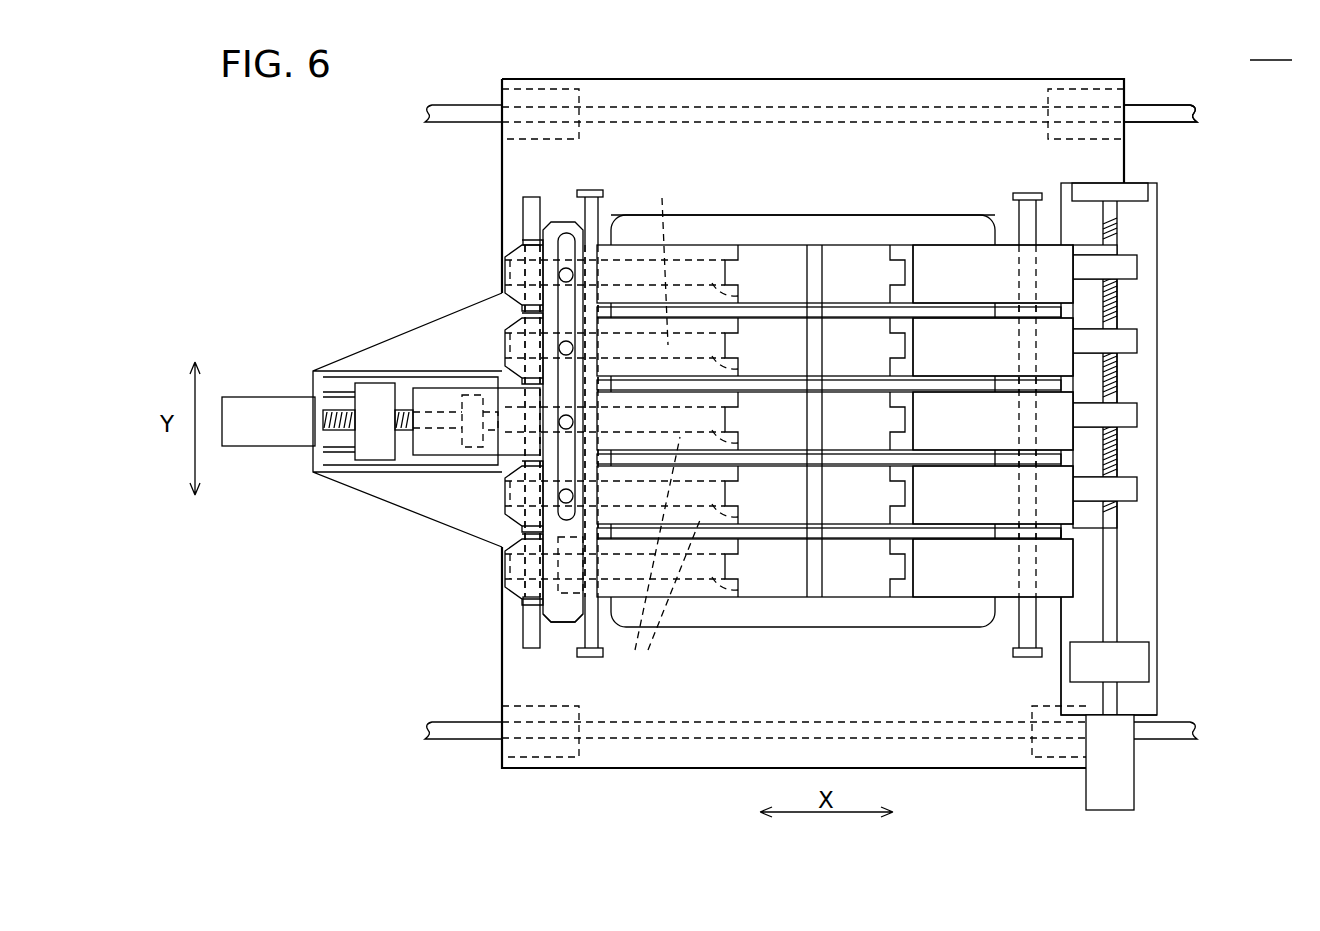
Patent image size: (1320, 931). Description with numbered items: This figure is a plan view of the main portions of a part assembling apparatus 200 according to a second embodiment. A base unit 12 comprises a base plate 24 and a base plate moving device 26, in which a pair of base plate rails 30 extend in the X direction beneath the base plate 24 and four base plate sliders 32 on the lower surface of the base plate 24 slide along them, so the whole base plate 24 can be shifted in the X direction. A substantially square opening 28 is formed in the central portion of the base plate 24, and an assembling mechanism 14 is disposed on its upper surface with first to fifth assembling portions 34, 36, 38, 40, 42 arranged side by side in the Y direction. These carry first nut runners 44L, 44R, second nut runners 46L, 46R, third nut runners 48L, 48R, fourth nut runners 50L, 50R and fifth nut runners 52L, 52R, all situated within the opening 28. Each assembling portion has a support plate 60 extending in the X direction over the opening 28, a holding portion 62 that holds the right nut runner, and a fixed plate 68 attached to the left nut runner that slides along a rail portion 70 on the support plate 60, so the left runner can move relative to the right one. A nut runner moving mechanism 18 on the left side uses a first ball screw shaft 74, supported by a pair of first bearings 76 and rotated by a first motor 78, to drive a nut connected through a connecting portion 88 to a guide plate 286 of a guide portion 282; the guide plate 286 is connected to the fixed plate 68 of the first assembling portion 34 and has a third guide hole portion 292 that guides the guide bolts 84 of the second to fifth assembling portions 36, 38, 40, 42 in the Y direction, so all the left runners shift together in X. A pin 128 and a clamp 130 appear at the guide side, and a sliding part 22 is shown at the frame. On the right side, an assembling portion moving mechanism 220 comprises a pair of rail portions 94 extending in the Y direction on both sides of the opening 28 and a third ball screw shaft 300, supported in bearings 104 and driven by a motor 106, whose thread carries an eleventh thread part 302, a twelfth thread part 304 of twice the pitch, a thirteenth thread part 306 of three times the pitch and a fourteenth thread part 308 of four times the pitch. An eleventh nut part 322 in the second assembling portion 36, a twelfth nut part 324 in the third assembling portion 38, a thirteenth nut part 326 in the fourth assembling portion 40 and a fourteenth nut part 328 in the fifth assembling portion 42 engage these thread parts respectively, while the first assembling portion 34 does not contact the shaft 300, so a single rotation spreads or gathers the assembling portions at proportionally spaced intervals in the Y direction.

The base unit 12 is at (1003, 68).
The assembling mechanism 14 is at (944, 182).
The nut runner moving mechanism 18 is at (398, 353).
The frame side wall 22 is at (502, 604).
The base plate 24 is at (928, 78).
The base plate moving device 26 is at (1167, 94).
The opening 28 is at (786, 217).
The base plate rail 30 is at (1196, 116).
The base plate slider 32 is at (537, 86).
The first assembling portion 34 is at (1058, 570).
The second assembling portion 36 is at (1080, 530).
The third assembling portion 38 is at (1108, 442).
The fourth assembling portion 40 is at (1100, 366).
The fifth assembling portion 42 is at (1105, 290).
The first nut runner 44L is at (826, 557).
The first nut runner 44R is at (895, 591).
The second nut runner 46L is at (826, 484).
The second nut runner 46R is at (895, 518).
The third nut runner 48L is at (826, 410).
The third nut runner 48R is at (895, 444).
The fourth nut runner 50L is at (826, 336).
The fourth nut runner 50R is at (895, 370).
The fifth nut runner 52L is at (826, 263).
The fifth nut runner 52R is at (895, 297).
The support plate 60 is at (1080, 252).
The holding portion 62 is at (912, 258).
The fixed plate 68 is at (742, 259).
The rail portion 70 is at (741, 295).
The first ball screw shaft 74 is at (345, 412).
The first bearing 76 is at (373, 458).
The first motor 78 is at (266, 405).
The guide bolt 84 is at (559, 275).
The connecting portion 88 is at (417, 452).
The rail portion 94 is at (600, 214).
The bearing 104 is at (1147, 193).
The motor 106 is at (1128, 785).
The post 128 is at (531, 650).
The clamp 130 is at (503, 265).
The pitch changing apparatus 200 is at (1272, 48).
The assembling portion moving mechanism 220 is at (1145, 447).
The guide portion 282 is at (576, 635).
The guide plate 286 is at (570, 220).
The third guide hole portion 292 is at (562, 238).
The third ball screw shaft 300 is at (1112, 702).
The eleventh thread part 302 is at (1110, 463).
The twelfth thread part 304 is at (1110, 388).
The thirteenth thread part 306 is at (1108, 330).
The fourteenth thread part 308 is at (1112, 228).
The eleventh nut part 322 is at (1125, 492).
The twelfth nut part 324 is at (1130, 418).
The thirteenth nut part 326 is at (1125, 345).
The fourteenth nut part 328 is at (1132, 270).